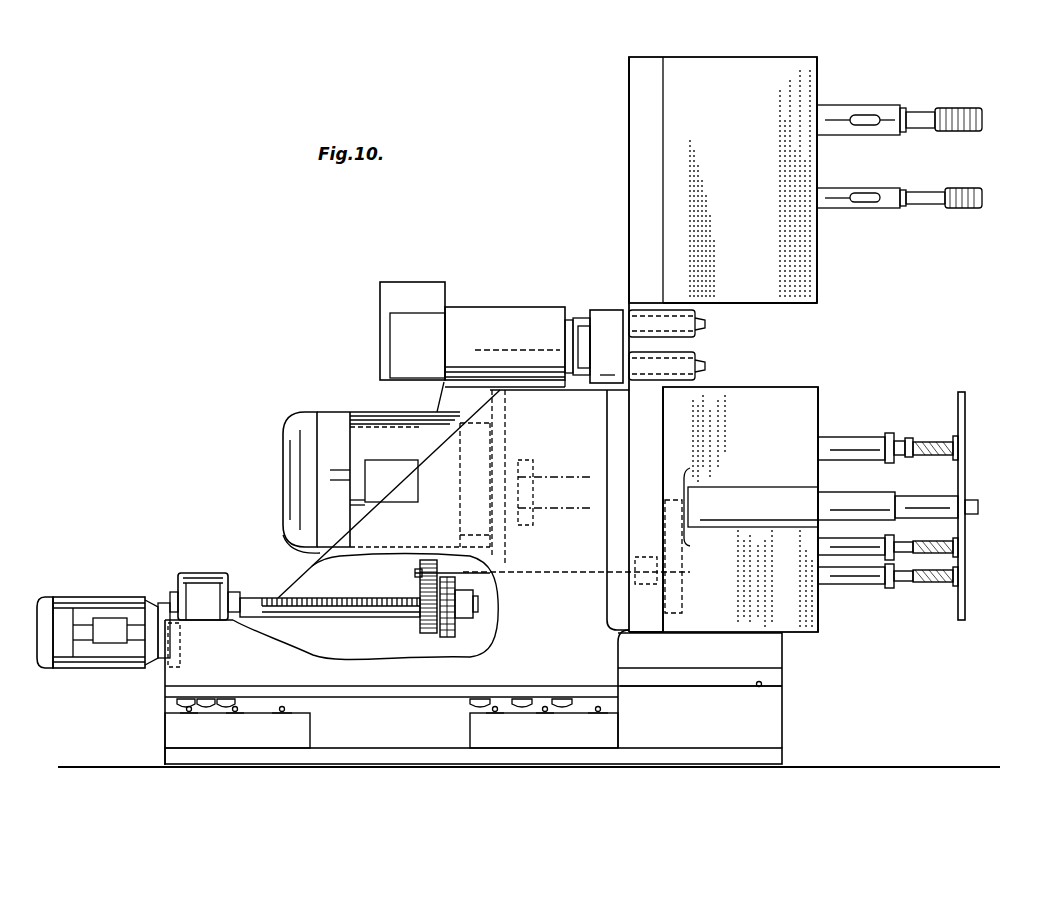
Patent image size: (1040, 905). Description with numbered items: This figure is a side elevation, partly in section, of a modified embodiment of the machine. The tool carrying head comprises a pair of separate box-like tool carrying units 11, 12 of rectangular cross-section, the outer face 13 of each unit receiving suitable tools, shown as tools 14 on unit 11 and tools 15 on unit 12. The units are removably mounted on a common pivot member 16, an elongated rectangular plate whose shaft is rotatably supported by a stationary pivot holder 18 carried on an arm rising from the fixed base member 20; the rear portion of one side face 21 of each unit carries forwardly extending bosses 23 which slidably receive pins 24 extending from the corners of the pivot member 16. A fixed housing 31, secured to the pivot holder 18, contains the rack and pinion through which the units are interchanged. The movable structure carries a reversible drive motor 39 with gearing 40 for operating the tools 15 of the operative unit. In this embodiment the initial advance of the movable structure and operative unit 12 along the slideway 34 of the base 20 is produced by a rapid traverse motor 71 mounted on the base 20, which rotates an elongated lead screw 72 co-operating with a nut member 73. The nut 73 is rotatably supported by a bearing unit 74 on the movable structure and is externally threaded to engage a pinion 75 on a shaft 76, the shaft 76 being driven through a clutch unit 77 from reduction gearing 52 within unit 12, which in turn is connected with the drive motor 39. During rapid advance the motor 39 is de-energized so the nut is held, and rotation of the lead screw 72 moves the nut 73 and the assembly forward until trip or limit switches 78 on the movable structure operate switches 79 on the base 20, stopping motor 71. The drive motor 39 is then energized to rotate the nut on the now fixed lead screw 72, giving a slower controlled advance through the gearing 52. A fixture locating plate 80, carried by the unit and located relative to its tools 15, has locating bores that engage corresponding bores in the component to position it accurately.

The tool carrying unit 11 is at (798, 84).
The tool carrying unit 12 is at (796, 387).
The outer face 13 is at (803, 172).
The tools 14 is at (970, 140).
The tools 15 is at (942, 487).
The common pivot member 16 is at (600, 315).
The stationary pivot holder 18 is at (505, 318).
The fixed base member 20 is at (748, 708).
The side face 21 is at (800, 303).
The bosses 23 is at (700, 365).
The pins 24 is at (706, 324).
The fixed housing 31 is at (416, 285).
The slideway 34 is at (760, 681).
The drive motor 39 is at (340, 412).
The gearing 40 is at (533, 462).
The reduction gearing 52 is at (682, 565).
The rapid traverse motor 71 is at (120, 597).
The lead screw 72 is at (348, 612).
The nut member 73 is at (420, 625).
The bearing unit 74 is at (457, 632).
The pinion 75 is at (418, 572).
The shaft 76 is at (476, 603).
The clutch unit 77 is at (636, 560).
The trip or limit switches 78 is at (228, 698).
The switches 79 is at (282, 714).
The plate 80 is at (965, 402).